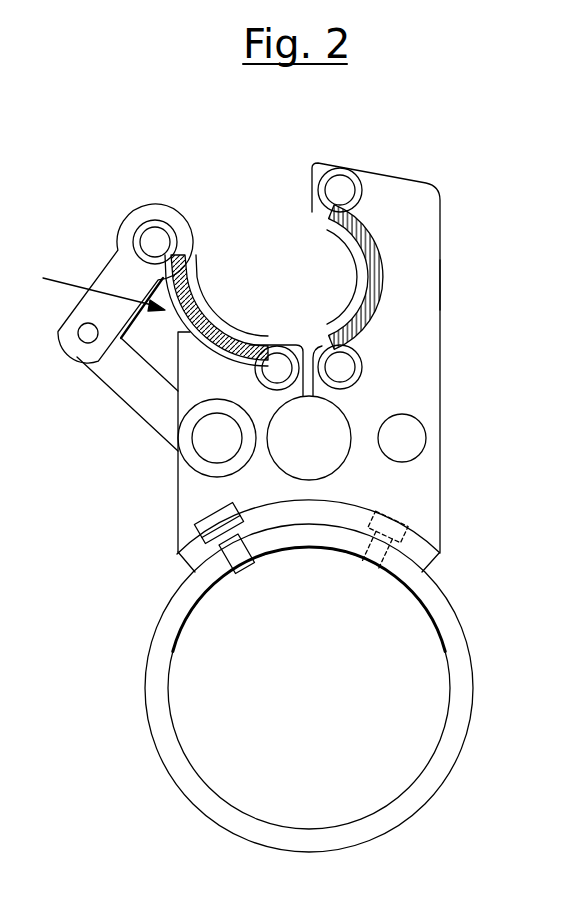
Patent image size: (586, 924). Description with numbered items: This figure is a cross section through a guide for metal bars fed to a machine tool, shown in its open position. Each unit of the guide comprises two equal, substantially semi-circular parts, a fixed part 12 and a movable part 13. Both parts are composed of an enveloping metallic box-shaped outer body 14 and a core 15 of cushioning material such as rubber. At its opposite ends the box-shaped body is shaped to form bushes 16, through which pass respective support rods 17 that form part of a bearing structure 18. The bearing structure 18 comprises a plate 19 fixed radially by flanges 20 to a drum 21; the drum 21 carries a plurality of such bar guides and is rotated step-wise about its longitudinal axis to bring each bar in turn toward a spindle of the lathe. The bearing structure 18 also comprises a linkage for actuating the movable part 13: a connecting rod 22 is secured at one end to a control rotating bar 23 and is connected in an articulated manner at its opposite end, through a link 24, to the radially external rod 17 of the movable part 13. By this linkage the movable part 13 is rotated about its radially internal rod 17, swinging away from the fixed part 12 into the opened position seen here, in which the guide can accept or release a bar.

The fixed part 12 is at (382, 250).
The movable part 13 is at (91, 288).
The box-shaped outer body 14 is at (192, 277).
The core 15 is at (222, 352).
The bushes 16 is at (157, 220).
The support rods 17 is at (147, 237).
The bearing structure 18 is at (445, 367).
The plate 19 is at (433, 287).
The flanges 20 is at (343, 516).
The drum 21 is at (447, 623).
The connecting rod 22 is at (125, 387).
The control rotating bar 23 is at (210, 450).
The link 24 is at (112, 275).